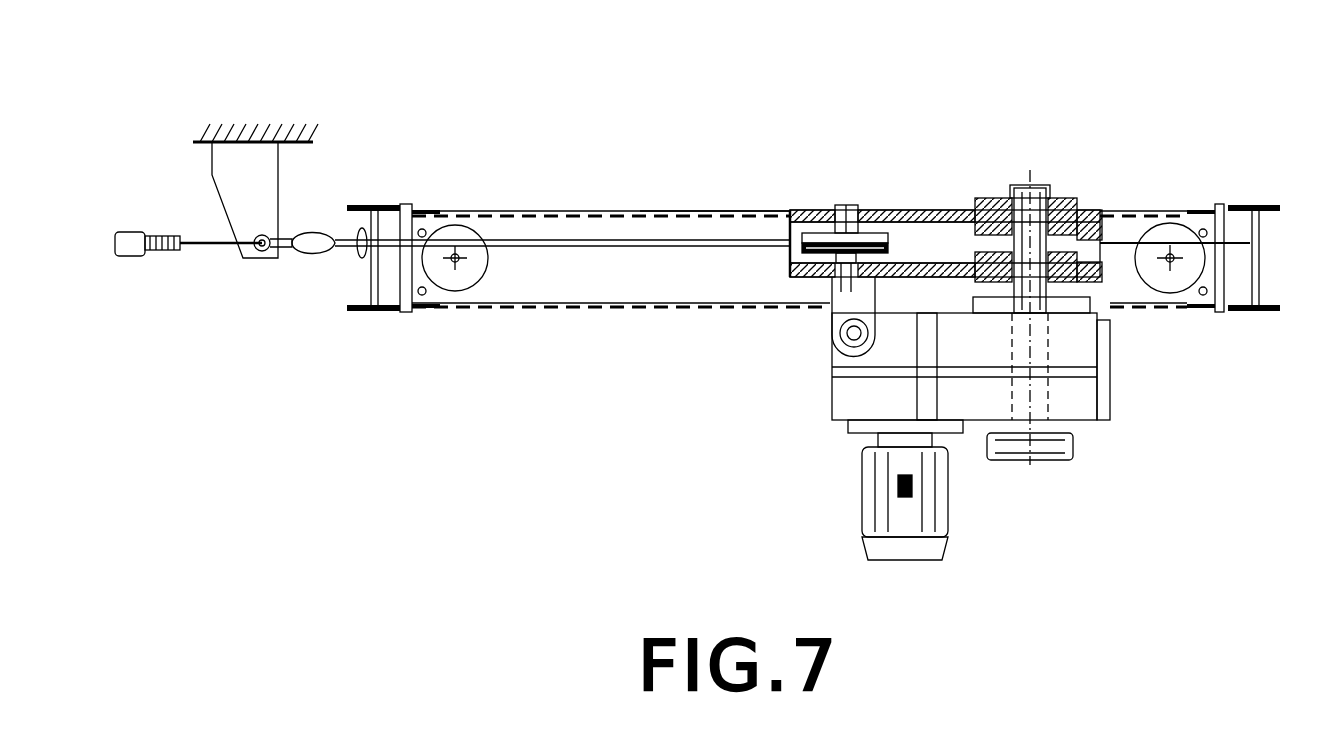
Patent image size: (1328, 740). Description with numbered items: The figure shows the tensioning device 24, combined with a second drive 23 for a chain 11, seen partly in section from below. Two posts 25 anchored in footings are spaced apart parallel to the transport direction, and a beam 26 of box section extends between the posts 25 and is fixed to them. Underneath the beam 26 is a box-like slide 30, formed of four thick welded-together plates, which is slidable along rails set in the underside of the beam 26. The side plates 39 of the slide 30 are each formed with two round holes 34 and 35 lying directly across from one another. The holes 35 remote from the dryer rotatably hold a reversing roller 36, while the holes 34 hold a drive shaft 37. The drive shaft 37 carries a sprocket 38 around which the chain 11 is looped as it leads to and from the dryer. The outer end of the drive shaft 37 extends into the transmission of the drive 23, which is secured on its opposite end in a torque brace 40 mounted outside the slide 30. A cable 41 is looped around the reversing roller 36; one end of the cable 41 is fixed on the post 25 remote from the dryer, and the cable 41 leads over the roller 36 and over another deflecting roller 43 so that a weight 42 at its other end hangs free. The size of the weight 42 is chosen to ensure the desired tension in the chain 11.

The chain 11 is at (965, 210).
The second drive 23 is at (1005, 400).
The tensioning device 24 is at (773, 130).
The post 25 is at (390, 205).
The beam 26 is at (626, 211).
The slide 30 is at (920, 235).
The hole 34 is at (1062, 210).
The hole 35 is at (840, 205).
The reversing roller 36 is at (800, 255).
The drive shaft 37 is at (1038, 200).
The sprocket 38 is at (1085, 208).
The side plate 39 is at (800, 225).
The torque brace 40 is at (835, 308).
The cable 41 is at (535, 238).
The weight 42 is at (130, 230).
The deflecting roller 43 is at (175, 262).